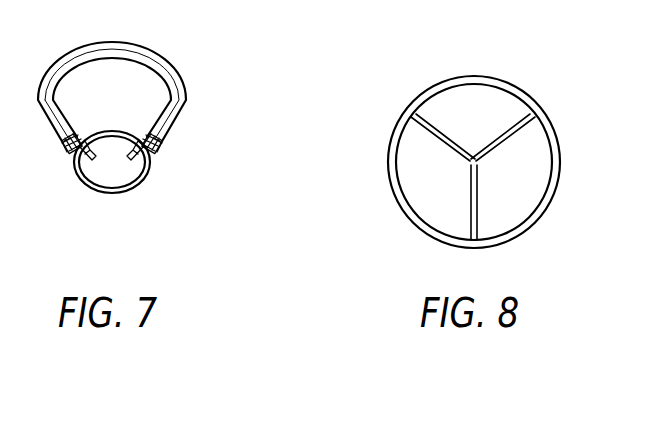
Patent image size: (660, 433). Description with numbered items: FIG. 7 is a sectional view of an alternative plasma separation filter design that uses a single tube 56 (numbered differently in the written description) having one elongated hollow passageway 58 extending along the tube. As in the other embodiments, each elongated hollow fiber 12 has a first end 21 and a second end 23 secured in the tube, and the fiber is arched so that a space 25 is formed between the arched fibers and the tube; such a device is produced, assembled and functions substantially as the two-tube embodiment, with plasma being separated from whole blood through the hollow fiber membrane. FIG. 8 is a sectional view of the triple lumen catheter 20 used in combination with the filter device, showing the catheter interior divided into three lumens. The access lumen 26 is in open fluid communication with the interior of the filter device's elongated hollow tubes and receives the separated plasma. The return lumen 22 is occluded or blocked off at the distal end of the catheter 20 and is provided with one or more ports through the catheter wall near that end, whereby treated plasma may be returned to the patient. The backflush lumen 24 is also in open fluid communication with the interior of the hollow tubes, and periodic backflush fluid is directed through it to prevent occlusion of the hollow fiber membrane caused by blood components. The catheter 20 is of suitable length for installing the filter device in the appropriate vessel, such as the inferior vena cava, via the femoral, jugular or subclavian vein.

In FIG. 7, the elongated hollow fiber 12 is at (147, 47).
In FIG. 7, the space 25 is at (142, 102).
In FIG. 7, the second end 23 is at (78, 175).
In FIG. 7, the first end 21 is at (148, 175).
In FIG. 7, the elongated hollow passageway 58 is at (98, 175).
In FIG. 7, the collar ring 56 is at (120, 193).
In FIG. 8, the triple lumen catheter 20 is at (557, 130).
In FIG. 8, the backflush lumen 24 is at (470, 102).
In FIG. 8, the return lumen 22 is at (517, 195).
In FIG. 8, the access lumen 26 is at (427, 198).